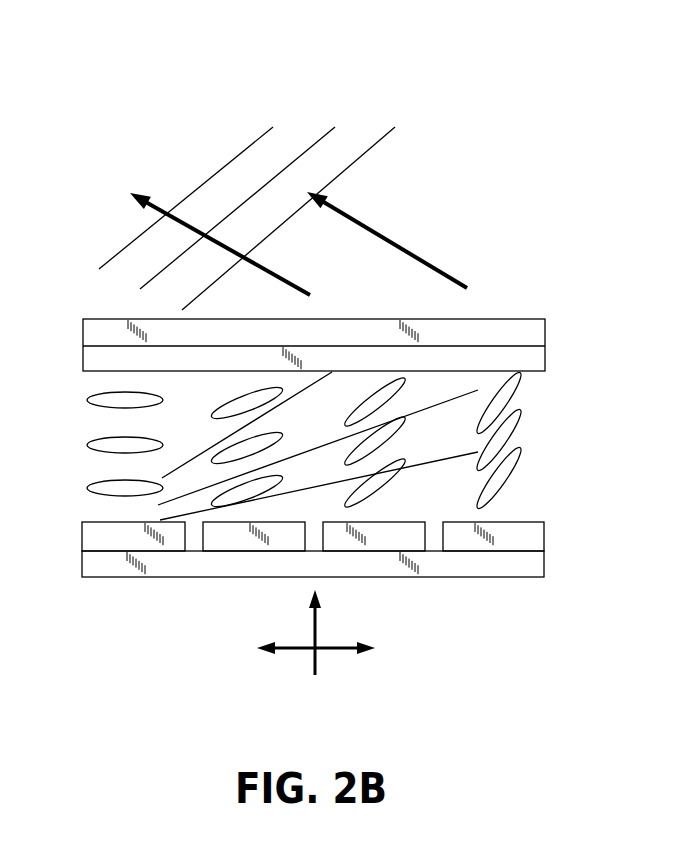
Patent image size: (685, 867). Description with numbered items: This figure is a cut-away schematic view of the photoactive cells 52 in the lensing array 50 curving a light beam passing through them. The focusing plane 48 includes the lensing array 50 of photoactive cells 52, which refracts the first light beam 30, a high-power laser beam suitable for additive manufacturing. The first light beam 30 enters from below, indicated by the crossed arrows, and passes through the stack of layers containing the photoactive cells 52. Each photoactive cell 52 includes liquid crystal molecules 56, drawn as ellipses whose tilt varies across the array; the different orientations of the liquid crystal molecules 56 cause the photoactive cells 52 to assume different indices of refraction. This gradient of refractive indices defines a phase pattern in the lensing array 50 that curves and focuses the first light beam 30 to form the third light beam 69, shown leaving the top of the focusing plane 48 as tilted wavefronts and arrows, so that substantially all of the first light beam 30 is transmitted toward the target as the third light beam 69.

The third light beam 69 is at (373, 145).
The focusing plane 48 is at (555, 320).
The lensing array 50 is at (313, 448).
The photoactive cells 52 is at (442, 592).
The liquid crystal molecule 56 is at (512, 387).
The first light beam 30 is at (317, 662).